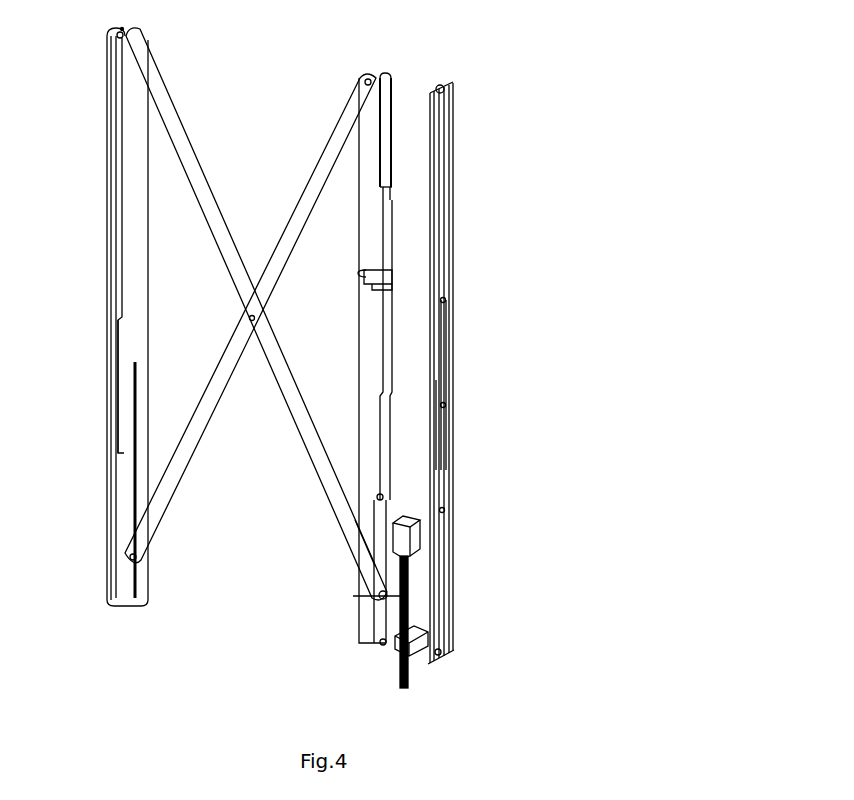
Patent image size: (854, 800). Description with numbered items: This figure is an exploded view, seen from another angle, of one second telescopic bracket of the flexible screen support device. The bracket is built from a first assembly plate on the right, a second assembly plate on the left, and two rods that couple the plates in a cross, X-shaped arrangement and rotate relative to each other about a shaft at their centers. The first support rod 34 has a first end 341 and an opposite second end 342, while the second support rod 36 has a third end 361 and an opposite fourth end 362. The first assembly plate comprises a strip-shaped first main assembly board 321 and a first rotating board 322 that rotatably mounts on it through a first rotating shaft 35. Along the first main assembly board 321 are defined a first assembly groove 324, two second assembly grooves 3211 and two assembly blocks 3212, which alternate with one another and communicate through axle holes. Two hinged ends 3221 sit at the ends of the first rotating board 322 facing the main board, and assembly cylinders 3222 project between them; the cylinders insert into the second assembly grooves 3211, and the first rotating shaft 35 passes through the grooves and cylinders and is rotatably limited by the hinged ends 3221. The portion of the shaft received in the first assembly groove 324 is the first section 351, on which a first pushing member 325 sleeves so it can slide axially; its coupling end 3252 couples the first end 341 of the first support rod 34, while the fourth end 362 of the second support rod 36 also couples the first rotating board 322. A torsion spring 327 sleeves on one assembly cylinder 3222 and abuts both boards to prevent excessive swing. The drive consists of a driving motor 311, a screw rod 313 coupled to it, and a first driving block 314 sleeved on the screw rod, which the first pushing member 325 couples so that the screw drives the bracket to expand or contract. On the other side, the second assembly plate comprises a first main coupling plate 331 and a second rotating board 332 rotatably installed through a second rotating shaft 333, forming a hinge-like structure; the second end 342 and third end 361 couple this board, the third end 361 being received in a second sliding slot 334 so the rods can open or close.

The first main coupling plate 331 is at (113, 210).
The second rotating shaft 333 is at (116, 287).
The second sliding slot 334 is at (126, 460).
The second rotating board 332 is at (137, 58).
The second end 342 is at (152, 72).
The first support rod 34 is at (193, 180).
The first end 341 is at (355, 545).
The second support rod 36 is at (178, 465).
The third end 361 is at (140, 553).
The fourth end 362 is at (363, 74).
The first rotating board 322 is at (365, 117).
The first rotating shaft 35 is at (390, 165).
The assembly cylinder 3222 is at (392, 225).
The torsion spring 327 is at (375, 274).
The coupling end 3252 is at (360, 590).
The first pushing member 325 is at (376, 598).
The hinged end 3221 is at (390, 77).
The first main assembly board 321 is at (453, 84).
The assembly block 3212 is at (443, 377).
The second assembly groove 3211 is at (442, 443).
The first assembly groove 324 is at (440, 620).
The first driving block 314 is at (448, 641).
The driving motor 311 is at (420, 532).
The first section 351 is at (410, 560).
The screw rod 313 is at (412, 588).